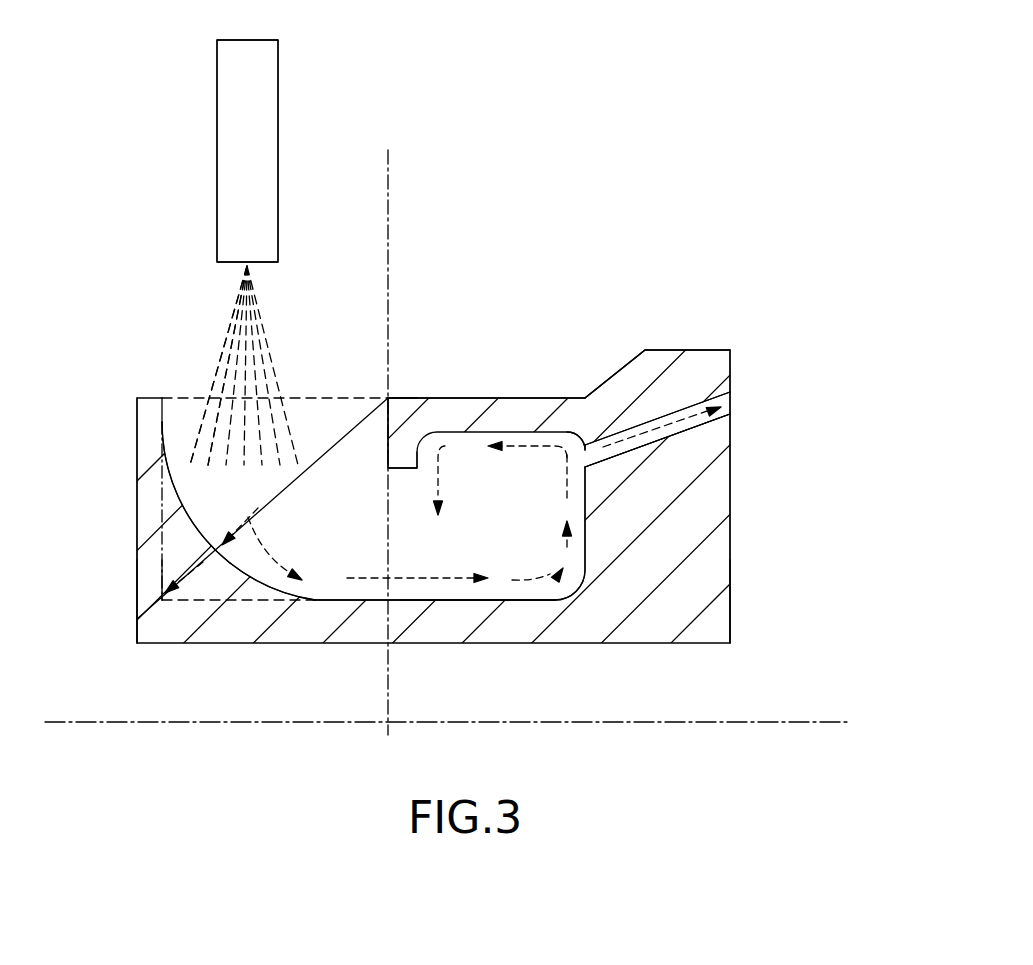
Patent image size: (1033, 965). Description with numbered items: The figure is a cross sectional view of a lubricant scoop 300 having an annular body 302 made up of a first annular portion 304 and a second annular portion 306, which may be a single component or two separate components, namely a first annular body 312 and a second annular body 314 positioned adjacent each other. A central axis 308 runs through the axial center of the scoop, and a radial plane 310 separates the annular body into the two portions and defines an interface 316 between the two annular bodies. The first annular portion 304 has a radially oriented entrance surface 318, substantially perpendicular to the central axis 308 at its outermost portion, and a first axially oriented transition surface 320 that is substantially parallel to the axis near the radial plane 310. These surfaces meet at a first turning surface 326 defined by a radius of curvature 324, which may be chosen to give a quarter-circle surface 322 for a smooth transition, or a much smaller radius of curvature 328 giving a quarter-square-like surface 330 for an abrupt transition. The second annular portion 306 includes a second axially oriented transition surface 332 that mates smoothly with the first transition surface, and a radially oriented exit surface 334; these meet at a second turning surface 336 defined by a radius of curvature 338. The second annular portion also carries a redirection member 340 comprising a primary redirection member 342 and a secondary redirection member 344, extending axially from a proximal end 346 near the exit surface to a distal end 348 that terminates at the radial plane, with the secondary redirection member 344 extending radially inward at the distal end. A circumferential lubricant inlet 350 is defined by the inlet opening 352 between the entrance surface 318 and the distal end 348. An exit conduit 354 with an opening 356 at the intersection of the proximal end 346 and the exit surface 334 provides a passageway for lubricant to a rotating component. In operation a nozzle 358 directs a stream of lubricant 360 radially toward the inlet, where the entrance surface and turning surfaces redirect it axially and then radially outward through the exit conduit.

The lubricant scoop 300 is at (708, 165).
The annular body 302 is at (753, 303).
The first annular portion 304 is at (137, 596).
The second annular portion 306 is at (731, 610).
The central axis 308 is at (797, 722).
The radial plane 310 is at (389, 191).
The first annular body 312 is at (137, 515).
The second annular body 314 is at (731, 500).
The interface 316 is at (400, 614).
The radially oriented entrance surface 318 is at (163, 424).
The first axially oriented transition surface 320 is at (349, 601).
The surface 322 is at (200, 533).
The radius of curvature 324 is at (343, 446).
The first turning surface 326 is at (270, 588).
The radius of curvature 328 is at (198, 567).
The surface 330 is at (162, 545).
The second axially oriented transition surface 332 is at (457, 601).
The radially oriented exit surface 334 is at (588, 477).
The second turning surface 336 is at (588, 557).
The radius of curvature 338 is at (557, 575).
The redirection member 340 is at (523, 398).
The primary redirection member 342 is at (564, 398).
The secondary redirection member 344 is at (402, 440).
The proximal end 346 is at (583, 398).
The distal end 348 is at (397, 397).
The circumferential lubricant inlet 350 is at (228, 390).
The inlet opening 352 is at (197, 398).
The exit conduit 354 is at (660, 427).
The opening 356 is at (567, 457).
The nozzle 358 is at (279, 63).
The stream of lubricant 360 is at (268, 321).